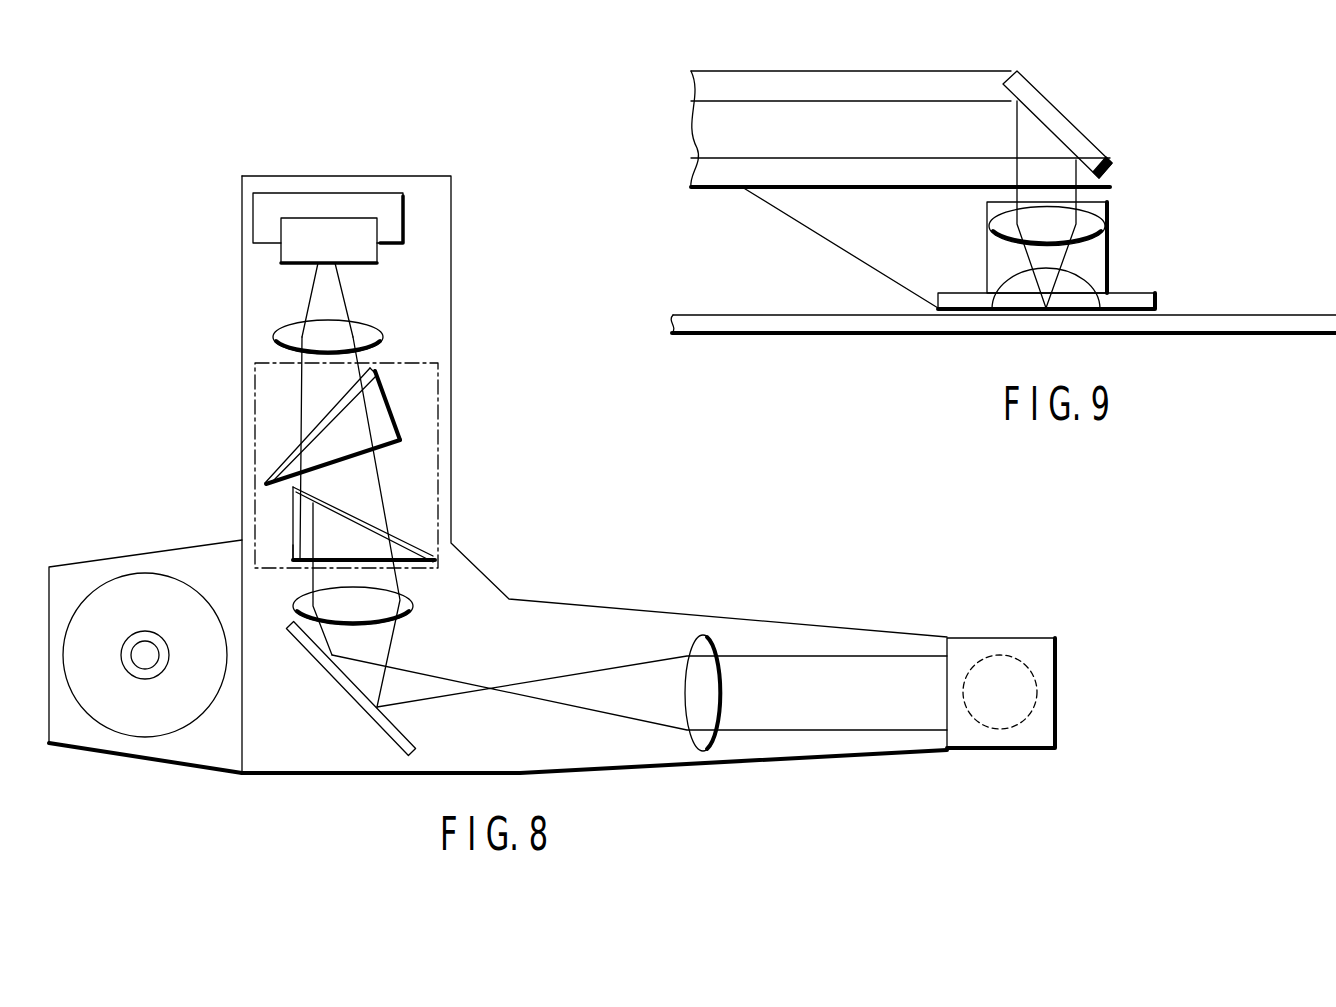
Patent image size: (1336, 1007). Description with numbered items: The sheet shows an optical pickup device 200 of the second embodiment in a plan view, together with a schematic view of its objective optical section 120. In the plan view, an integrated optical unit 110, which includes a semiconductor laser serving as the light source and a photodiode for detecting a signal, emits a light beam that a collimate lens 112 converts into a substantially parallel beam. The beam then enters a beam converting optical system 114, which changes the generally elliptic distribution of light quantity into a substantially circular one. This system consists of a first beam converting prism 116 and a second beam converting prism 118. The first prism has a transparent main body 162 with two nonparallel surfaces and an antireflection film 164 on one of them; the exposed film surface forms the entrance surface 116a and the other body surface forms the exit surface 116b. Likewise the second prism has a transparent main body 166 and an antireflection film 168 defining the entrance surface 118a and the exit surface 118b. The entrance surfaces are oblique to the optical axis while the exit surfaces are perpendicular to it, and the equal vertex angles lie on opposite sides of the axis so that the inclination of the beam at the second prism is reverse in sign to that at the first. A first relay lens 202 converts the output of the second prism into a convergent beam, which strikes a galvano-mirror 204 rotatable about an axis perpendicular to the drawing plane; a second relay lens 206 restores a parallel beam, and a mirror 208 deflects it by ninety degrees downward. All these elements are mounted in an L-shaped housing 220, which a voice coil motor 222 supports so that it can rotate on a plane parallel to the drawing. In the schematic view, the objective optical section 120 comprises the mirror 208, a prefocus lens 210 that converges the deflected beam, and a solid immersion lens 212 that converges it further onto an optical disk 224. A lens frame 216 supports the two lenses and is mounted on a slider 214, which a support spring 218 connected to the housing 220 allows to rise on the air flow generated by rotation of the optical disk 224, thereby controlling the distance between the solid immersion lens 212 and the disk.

In FIG. 8, the integrated optical unit 110 is at (253, 219).
In FIG. 8, the collimate lens 112 is at (373, 324).
In FIG. 8, the beam converting optical system 114 is at (255, 398).
In FIG. 8, the first beam converting prism 116 is at (380, 411).
In FIG. 8, the entrance surface 116a is at (327, 422).
In FIG. 8, the exit surface 116b is at (397, 446).
In FIG. 8, the second beam converting prism 118 is at (318, 549).
In FIG. 8, the entrance surface 118a is at (357, 512).
In FIG. 8, the exit surface 118b is at (328, 561).
In FIG. 8, the transparent main body 162 is at (375, 398).
In FIG. 8, the antireflection film 164 is at (371, 369).
In FIG. 8, the transparent main body 166 is at (297, 548).
In FIG. 8, the antireflection film 168 is at (292, 487).
In FIG. 8, the optical head 200 is at (592, 478).
In FIG. 8, the first relay lens 202 is at (415, 605).
In FIG. 8, the galvano-mirror 204 is at (353, 700).
In FIG. 8, the second relay lens 206 is at (702, 635).
In FIG. 8, the mirror 208 is at (1003, 650).
In FIG. 9, the mirror 208 is at (1074, 120).
In FIG. 8, the L-shaped housing 220 is at (817, 618).
In FIG. 9, the L-shaped housing 220 is at (1003, 71).
In FIG. 8, the voice coil motor 222 is at (138, 573).
In FIG. 9, the objective optical section 120 is at (1216, 194).
In FIG. 9, the prefocus lens 210 is at (1097, 226).
In FIG. 9, the solid immersion lens 212 is at (1080, 286).
In FIG. 9, the slider 214 is at (986, 257).
In FIG. 9, the lens frame 216 is at (1158, 298).
In FIG. 9, the support spring 218 is at (807, 229).
In FIG. 9, the optical disk 224 is at (1268, 313).